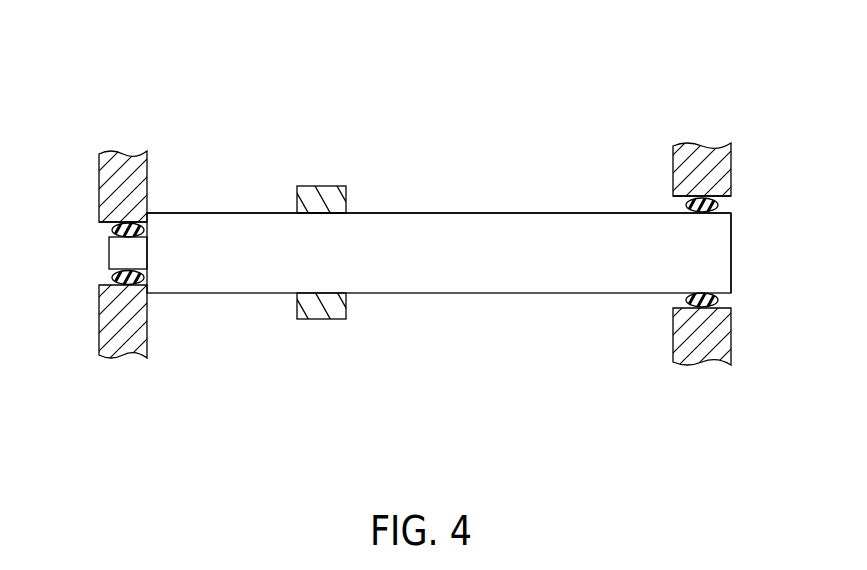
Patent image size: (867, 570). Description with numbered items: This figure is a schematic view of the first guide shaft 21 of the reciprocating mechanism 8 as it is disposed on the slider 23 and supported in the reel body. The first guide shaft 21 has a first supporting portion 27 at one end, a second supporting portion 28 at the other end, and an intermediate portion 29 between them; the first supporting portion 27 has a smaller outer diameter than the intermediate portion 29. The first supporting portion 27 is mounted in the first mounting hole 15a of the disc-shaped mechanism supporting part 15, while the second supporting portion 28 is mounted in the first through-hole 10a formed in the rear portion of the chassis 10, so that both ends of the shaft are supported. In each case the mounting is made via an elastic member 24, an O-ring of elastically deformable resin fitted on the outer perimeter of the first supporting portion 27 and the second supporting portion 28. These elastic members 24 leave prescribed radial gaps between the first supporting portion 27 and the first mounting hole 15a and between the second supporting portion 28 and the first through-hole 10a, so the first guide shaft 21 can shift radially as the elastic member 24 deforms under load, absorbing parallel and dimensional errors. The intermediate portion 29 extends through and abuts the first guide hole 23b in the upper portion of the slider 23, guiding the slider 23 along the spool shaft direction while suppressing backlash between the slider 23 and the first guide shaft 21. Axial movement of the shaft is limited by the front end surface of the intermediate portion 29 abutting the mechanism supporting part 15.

The reciprocating mechanism 8 is at (553, 127).
The chassis 10 is at (667, 335).
The first through-hole 10a is at (678, 202).
The mechanism supporting part 15 is at (150, 321).
The first mounting hole 15a is at (104, 233).
The first guide shaft 21 is at (480, 296).
The slider 23 is at (345, 178).
The first guide hole 23b is at (310, 213).
The elastic member 24 is at (126, 226).
The first supporting portion 27 is at (129, 250).
The second supporting portion 28 is at (708, 255).
The intermediate portion 29 is at (447, 228).